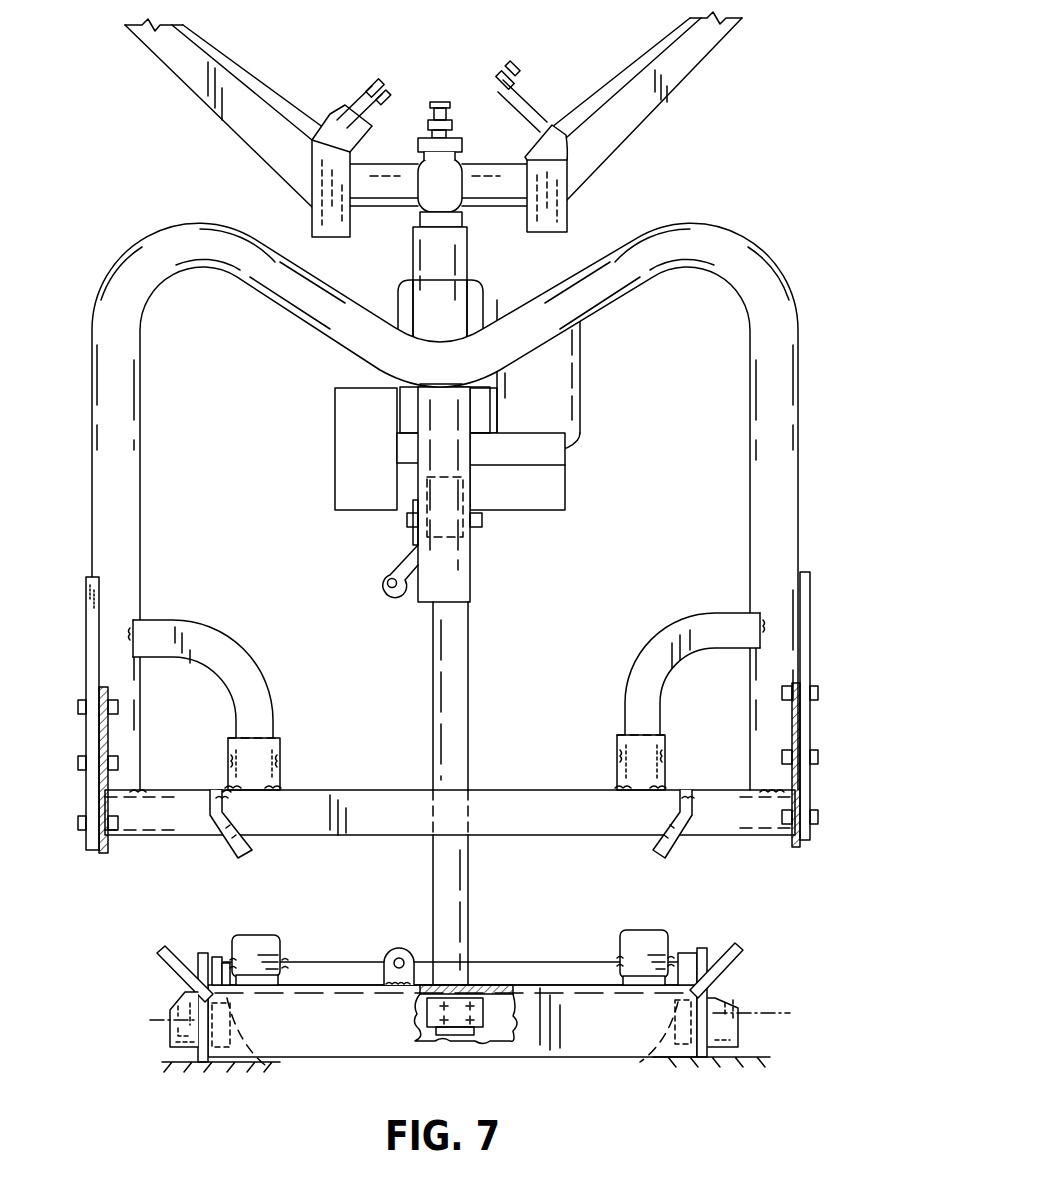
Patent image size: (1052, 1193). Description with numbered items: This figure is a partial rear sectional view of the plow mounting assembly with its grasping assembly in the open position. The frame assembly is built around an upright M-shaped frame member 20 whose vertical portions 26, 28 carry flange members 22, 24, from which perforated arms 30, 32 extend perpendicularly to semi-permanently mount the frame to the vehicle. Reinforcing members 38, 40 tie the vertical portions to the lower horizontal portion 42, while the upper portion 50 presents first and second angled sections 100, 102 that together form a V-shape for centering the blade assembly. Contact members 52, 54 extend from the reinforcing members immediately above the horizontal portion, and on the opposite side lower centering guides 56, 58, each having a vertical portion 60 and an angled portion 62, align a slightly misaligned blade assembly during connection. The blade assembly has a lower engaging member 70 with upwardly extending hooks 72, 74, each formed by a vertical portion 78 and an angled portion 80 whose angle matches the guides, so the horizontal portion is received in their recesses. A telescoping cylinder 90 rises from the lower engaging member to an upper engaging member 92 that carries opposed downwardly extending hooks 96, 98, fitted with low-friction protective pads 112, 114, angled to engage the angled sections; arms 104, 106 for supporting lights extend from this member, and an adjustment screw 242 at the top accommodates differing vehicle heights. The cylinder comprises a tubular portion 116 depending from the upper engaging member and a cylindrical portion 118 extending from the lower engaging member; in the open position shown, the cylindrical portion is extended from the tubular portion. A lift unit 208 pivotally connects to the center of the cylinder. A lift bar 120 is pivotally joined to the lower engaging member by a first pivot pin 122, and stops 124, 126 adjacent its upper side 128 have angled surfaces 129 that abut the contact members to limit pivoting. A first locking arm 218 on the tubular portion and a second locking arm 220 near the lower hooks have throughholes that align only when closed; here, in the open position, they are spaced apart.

The frame member 20 is at (803, 392).
The flange member 22 is at (807, 618).
The flange member 24 is at (92, 622).
The vertical portion 26 is at (787, 467).
The vertical portion 28 is at (110, 418).
The arm 30 is at (795, 845).
The arm 32 is at (106, 852).
The reinforcing member 38 is at (695, 628).
The reinforcing member 40 is at (200, 637).
The lower horizontal portion 42 is at (499, 797).
The upper portion 50 is at (697, 223).
The contact member 52 is at (620, 750).
The contact member 54 is at (281, 748).
The lower centering guide 56 is at (650, 849).
The lower centering guide 58 is at (254, 854).
The vertical portion 60 is at (212, 805).
The angled portion 62 is at (233, 845).
The lower engaging member 70 is at (345, 1056).
The hook 72 is at (705, 1061).
The hook 74 is at (202, 1067).
The vertical portion 78 is at (197, 1040).
The angled portion 80 is at (165, 968).
The telescoping cylinder 90 is at (472, 259).
The upper engaging member 92 is at (392, 210).
The hook 96 is at (527, 123).
The hook 98 is at (348, 125).
The first angled section 100 is at (578, 293).
The second angled section 102 is at (287, 283).
The arm 104 is at (676, 68).
The arm 106 is at (190, 70).
The protective pad 112 is at (553, 120).
The protective pad 114 is at (333, 123).
The tubular portion 116 is at (472, 565).
The cylindrical portion 118 is at (469, 665).
The lift bar 120 is at (472, 934).
The first pivot pin 122 is at (263, 1064).
The stop 124 is at (668, 935).
The stop 126 is at (283, 942).
The upper side 128 is at (548, 967).
The angled surface 129 is at (253, 943).
The lift unit 208 is at (572, 383).
The first locking arm 218 is at (397, 563).
The second locking arm 220 is at (397, 950).
The adjustment screw 242 is at (438, 100).